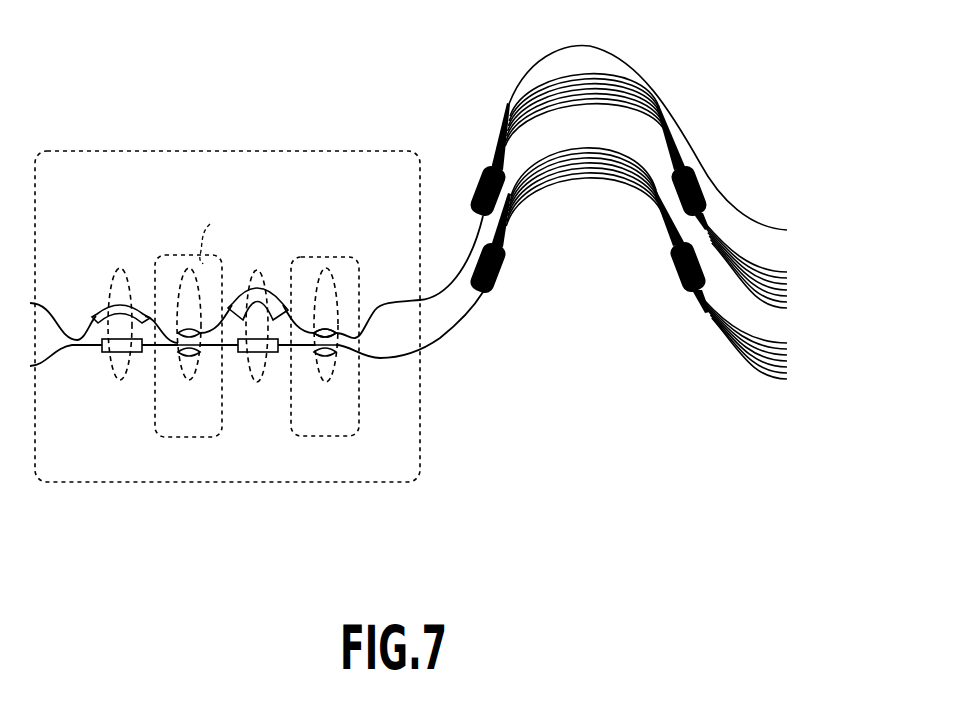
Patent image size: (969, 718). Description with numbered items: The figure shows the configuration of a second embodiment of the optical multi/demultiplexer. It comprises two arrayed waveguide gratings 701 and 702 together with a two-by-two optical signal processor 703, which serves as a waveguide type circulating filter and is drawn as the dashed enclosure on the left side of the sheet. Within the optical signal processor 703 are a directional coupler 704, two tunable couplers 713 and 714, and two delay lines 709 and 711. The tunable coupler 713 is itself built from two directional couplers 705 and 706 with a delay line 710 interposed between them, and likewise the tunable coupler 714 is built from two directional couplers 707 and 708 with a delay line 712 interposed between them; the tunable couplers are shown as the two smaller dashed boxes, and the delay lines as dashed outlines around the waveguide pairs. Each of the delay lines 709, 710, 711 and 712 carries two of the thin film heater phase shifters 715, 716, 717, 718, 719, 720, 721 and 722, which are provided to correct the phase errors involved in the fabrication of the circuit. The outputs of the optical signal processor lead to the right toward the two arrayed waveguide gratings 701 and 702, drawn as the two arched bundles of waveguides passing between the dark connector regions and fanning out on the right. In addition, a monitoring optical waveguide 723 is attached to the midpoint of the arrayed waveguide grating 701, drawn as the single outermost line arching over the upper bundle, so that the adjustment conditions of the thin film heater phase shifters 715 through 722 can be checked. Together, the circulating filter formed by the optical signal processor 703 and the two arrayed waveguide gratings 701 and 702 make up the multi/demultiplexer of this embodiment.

The arrayed waveguide grating 701 is at (627, 96).
The arrayed waveguide grating 702 is at (630, 168).
The 2×2 optical signal processor 703 is at (368, 151).
The directional coupler 704 is at (72, 346).
The directional coupler 705 is at (172, 345).
The directional coupler 706 is at (212, 348).
The directional coupler 707 is at (302, 347).
The directional coupler 708 is at (343, 347).
The delay line 709 is at (113, 272).
The delay line 710 is at (223, 233).
The delay line 711 is at (263, 274).
The delay line 712 is at (337, 270).
The tunable coupler 713 is at (177, 256).
The tunable coupler 714 is at (328, 257).
The thin film heater phase shifter 715 is at (100, 309).
The thin film heater phase shifter 716 is at (104, 353).
The thin film heater phase shifter 717 is at (186, 326).
The thin film heater phase shifter 718 is at (183, 360).
The thin film heater phase shifter 719 is at (236, 296).
The thin film heater phase shifter 720 is at (243, 352).
The thin film heater phase shifter 721 is at (330, 327).
The thin film heater phase shifter 722 is at (323, 360).
The monitoring optical waveguide 723 is at (740, 211).